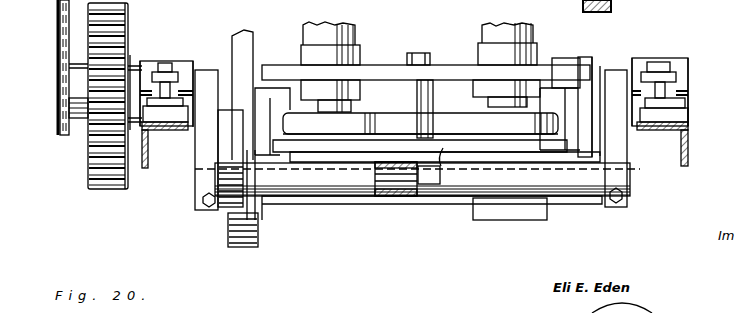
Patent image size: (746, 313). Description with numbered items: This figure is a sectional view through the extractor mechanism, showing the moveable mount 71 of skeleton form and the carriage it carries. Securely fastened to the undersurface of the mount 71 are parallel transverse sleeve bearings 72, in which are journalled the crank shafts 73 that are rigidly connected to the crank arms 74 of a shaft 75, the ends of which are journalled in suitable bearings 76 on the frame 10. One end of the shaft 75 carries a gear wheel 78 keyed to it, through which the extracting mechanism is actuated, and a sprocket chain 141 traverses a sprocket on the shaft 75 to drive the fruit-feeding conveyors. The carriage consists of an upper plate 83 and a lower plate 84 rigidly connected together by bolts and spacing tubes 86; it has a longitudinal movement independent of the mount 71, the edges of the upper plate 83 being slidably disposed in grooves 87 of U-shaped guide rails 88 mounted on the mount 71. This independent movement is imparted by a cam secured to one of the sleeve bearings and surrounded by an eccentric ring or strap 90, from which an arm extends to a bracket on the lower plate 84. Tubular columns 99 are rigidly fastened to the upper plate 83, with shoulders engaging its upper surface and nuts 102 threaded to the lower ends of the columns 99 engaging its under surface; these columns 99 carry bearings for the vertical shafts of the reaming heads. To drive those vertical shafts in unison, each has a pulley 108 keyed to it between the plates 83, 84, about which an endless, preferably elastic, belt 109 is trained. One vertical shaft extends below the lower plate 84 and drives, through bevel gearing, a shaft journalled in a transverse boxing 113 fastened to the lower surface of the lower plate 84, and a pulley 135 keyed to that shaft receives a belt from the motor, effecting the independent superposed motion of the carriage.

The sprocket chain 141 is at (62, 143).
The gear wheel 78 is at (98, 192).
The frame 10 is at (144, 170).
The bearings 76 is at (165, 63).
The shaft 75 is at (207, 88).
The crank arms 74 is at (196, 178).
The eccentric ring or strap 90 is at (222, 196).
The pulley 135 is at (258, 240).
The U-shaped guide rails 88 is at (260, 58).
The grooves 87 is at (278, 66).
The upper plate 83 is at (406, 66).
The spacing tubes 86 is at (435, 92).
The nuts 102 is at (357, 115).
The tubular columns 99 is at (516, 22).
The pulley 108 is at (300, 110).
The endless belt 109 is at (436, 137).
The sleeve bearings 72 is at (345, 196).
The crank shafts 73 is at (395, 196).
The lower plate 84 is at (441, 166).
The transverse boxing 113 is at (442, 211).
The mount 71 is at (608, 68).